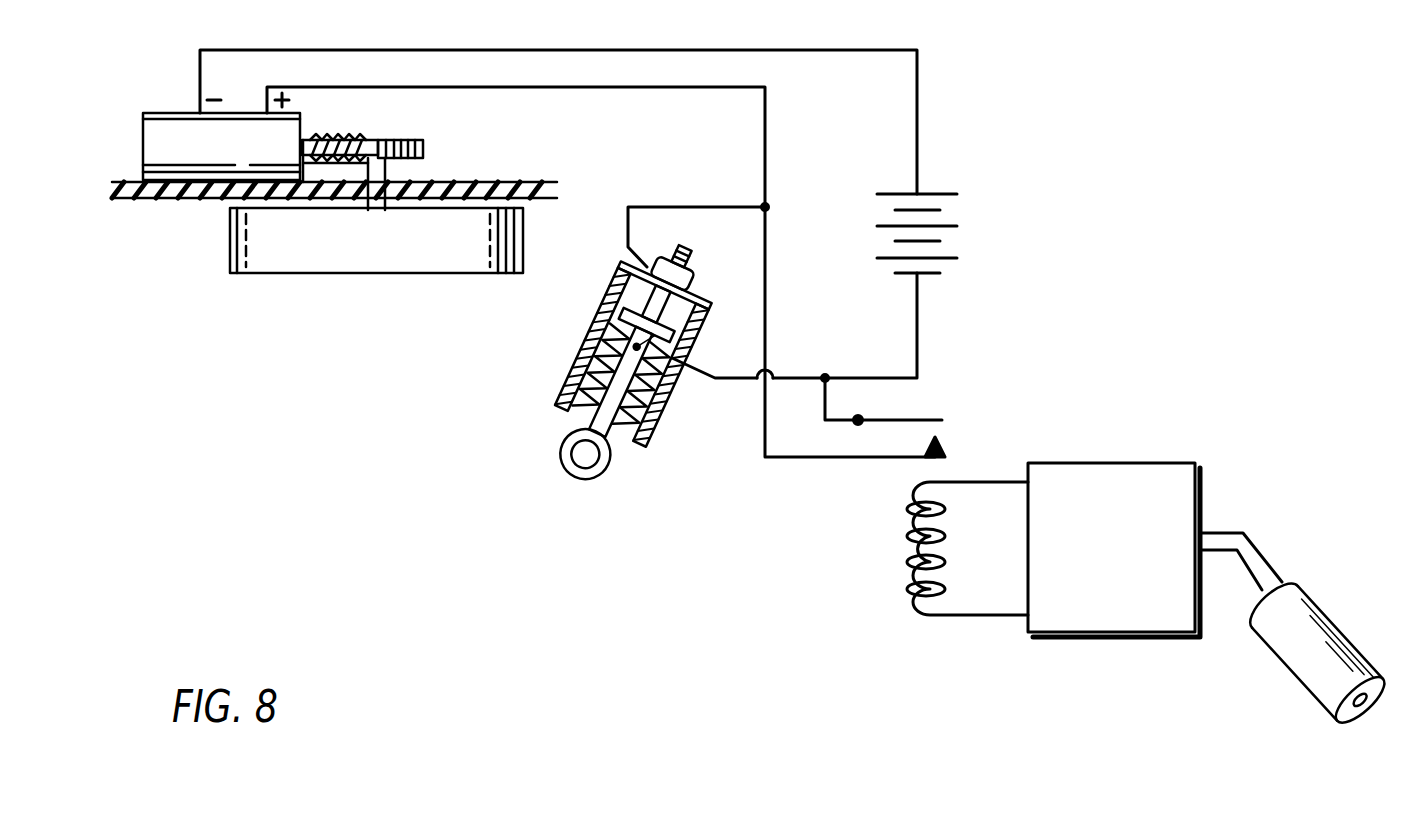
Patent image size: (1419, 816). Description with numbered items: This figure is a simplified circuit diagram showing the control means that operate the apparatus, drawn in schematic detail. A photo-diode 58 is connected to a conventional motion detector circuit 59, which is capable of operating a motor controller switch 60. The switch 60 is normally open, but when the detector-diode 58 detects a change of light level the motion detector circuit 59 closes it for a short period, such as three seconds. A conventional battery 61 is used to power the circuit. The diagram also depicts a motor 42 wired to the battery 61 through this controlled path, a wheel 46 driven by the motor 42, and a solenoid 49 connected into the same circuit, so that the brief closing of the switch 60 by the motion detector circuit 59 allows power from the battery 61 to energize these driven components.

The motor 42 is at (168, 135).
The wheel 46 is at (336, 255).
The solenoid 49 is at (672, 451).
The photo-diode 58 is at (1338, 628).
The motion detector circuit 59 is at (1148, 475).
The motor controller switch 60 is at (968, 423).
The battery 61 is at (968, 206).